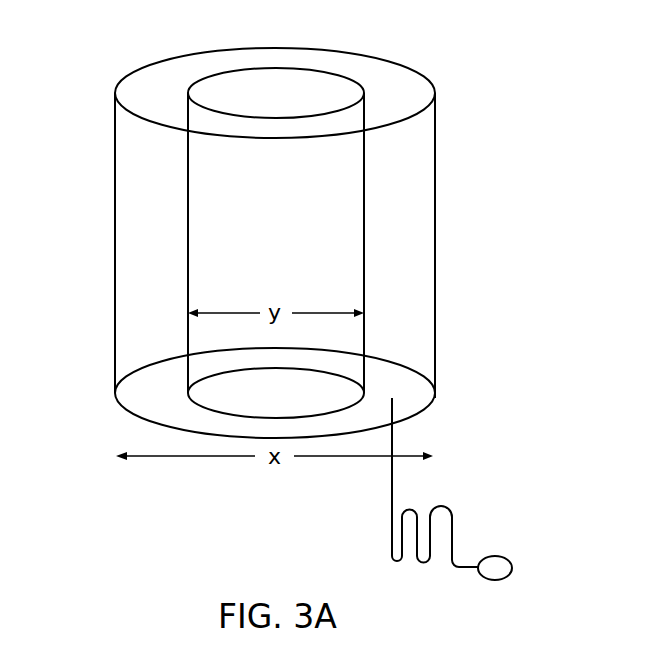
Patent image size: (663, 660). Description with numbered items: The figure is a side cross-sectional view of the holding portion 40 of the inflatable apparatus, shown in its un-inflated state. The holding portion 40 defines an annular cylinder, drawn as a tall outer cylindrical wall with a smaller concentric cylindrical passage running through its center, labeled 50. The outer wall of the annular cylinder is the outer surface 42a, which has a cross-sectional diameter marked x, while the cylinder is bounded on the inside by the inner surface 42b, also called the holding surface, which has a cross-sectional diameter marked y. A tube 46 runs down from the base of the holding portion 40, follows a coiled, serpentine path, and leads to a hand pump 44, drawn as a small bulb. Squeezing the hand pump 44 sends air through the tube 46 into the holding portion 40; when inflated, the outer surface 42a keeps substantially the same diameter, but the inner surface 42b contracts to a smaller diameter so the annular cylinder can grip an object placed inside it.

The holding portion 40 is at (413, 67).
The central bore 50 is at (274, 92).
The outer surface 42a is at (116, 218).
The inner surface 42b is at (188, 197).
The tube 46 is at (395, 501).
The hand pump 44 is at (489, 558).